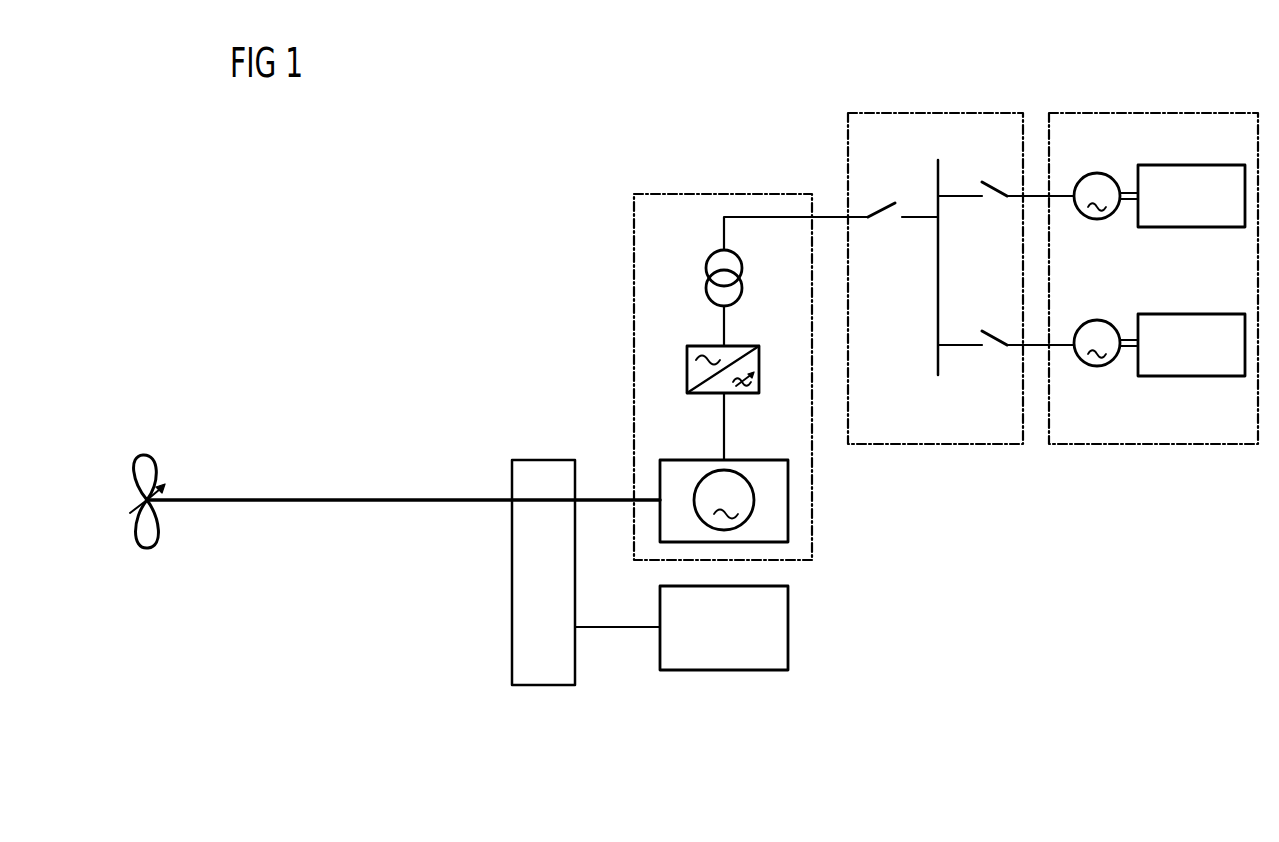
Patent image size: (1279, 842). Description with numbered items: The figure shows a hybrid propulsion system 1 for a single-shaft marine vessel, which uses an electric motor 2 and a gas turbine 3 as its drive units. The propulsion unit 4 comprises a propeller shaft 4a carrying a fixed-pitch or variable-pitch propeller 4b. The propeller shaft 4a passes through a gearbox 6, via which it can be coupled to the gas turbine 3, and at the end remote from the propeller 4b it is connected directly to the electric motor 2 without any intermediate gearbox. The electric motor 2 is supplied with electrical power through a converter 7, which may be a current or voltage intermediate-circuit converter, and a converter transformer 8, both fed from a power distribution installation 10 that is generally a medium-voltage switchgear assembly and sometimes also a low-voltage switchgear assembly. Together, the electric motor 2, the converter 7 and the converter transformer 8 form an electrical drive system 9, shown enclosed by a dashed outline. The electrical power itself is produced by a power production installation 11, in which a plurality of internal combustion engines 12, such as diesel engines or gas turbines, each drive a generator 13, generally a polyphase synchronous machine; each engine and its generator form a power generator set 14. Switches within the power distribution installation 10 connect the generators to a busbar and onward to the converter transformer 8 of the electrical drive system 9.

The hybrid propulsion system 1 is at (486, 178).
The electric motor 2 is at (789, 500).
The gas turbine 3 is at (789, 628).
The propulsion unit 4 is at (324, 533).
The propeller shaft 4a is at (368, 497).
The propeller 4b is at (147, 452).
The gearbox 6 is at (540, 459).
The converter 7 is at (748, 395).
The converter transformer 8 is at (742, 290).
The electrical drive system 9 is at (633, 243).
The power distribution installation 10 is at (997, 445).
The power production installation 11 is at (1230, 445).
The internal combustion engine 12 is at (1175, 228).
The generator 13 is at (1097, 220).
The power generator set 14 is at (1134, 122).